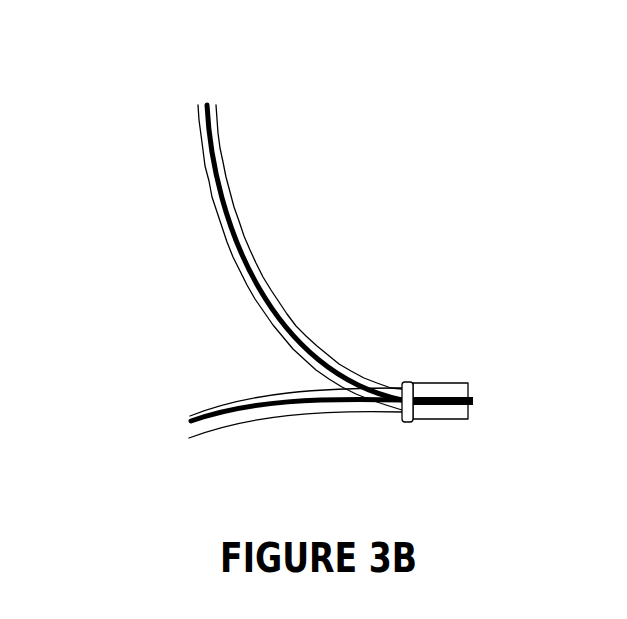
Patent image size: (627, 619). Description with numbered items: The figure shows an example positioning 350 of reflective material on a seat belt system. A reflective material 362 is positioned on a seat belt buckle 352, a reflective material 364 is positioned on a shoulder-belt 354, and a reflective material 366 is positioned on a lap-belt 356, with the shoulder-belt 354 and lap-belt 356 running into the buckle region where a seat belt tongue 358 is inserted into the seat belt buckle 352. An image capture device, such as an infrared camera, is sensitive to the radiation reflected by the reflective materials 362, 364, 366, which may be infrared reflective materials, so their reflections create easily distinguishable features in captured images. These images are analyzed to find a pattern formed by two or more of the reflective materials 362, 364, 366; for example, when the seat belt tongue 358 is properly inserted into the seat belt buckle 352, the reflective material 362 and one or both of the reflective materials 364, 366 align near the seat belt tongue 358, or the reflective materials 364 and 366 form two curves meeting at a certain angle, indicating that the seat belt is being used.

The example positioning of reflective material 350 is at (343, 70).
The seat belt buckle 352 is at (441, 383).
The shoulder-belt 354 is at (254, 272).
The lap-belt 356 is at (260, 393).
The seat belt tongue 358 is at (407, 382).
The reflective material 362 is at (440, 403).
The reflective material 364 is at (280, 317).
The reflective material 366 is at (206, 410).